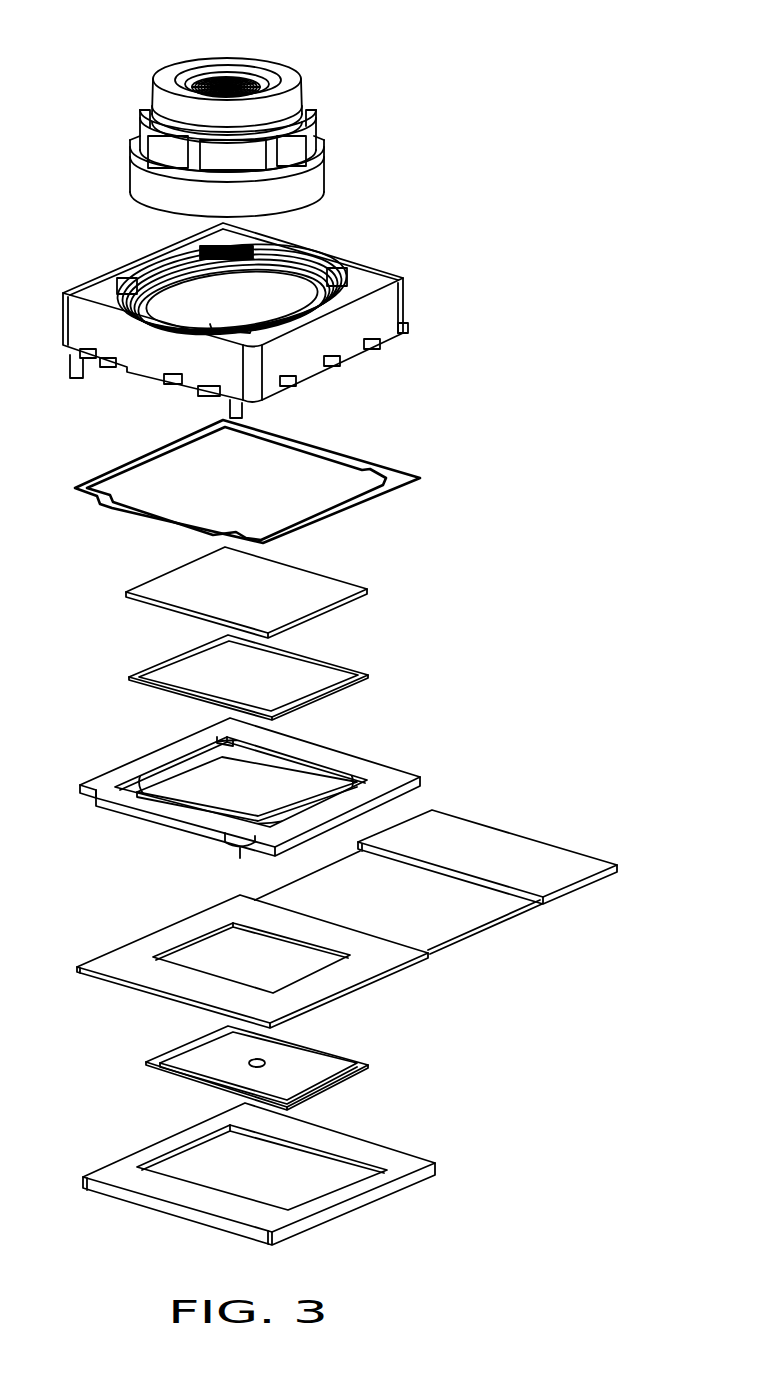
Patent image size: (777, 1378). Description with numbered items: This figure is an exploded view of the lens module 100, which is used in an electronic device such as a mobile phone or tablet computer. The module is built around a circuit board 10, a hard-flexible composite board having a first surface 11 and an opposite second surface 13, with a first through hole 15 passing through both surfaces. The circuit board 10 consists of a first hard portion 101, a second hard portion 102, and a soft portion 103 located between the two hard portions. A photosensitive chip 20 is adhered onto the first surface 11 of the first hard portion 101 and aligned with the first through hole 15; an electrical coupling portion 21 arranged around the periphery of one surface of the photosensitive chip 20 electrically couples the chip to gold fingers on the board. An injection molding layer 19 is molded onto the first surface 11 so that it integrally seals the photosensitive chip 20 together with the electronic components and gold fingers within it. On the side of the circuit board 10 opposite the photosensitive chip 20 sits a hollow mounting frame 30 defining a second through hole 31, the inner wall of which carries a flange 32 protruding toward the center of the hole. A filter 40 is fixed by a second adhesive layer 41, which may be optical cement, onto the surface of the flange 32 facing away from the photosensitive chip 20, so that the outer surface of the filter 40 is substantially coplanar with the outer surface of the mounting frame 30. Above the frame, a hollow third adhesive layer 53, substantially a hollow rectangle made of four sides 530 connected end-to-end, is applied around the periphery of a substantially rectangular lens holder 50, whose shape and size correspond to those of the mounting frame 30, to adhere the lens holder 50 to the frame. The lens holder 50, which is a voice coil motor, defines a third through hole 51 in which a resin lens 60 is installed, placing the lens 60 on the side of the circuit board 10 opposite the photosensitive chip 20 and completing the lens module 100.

The lens module 100 is at (203, 31).
The lens 60 is at (292, 108).
The lens holder 50 is at (372, 272).
The third through hole 51 is at (263, 292).
The third adhesive layer 53 is at (385, 472).
The sides 530 is at (323, 450).
The filter 40 is at (330, 583).
The second adhesive layer 41 is at (340, 668).
The mounting frame 30 is at (395, 770).
The second through hole 31 is at (203, 772).
The flange 32 is at (283, 768).
The circuit board 10 is at (610, 962).
The first hard portion 101 is at (377, 962).
The second hard portion 102 is at (558, 875).
The soft portion 103 is at (455, 912).
The first surface 11 is at (97, 983).
The second surface 13 is at (115, 952).
The first through hole 15 is at (220, 945).
The photosensitive chip 20 is at (155, 1065).
The electrical coupling portion 21 is at (350, 1078).
The injection molding layer 19 is at (425, 1168).